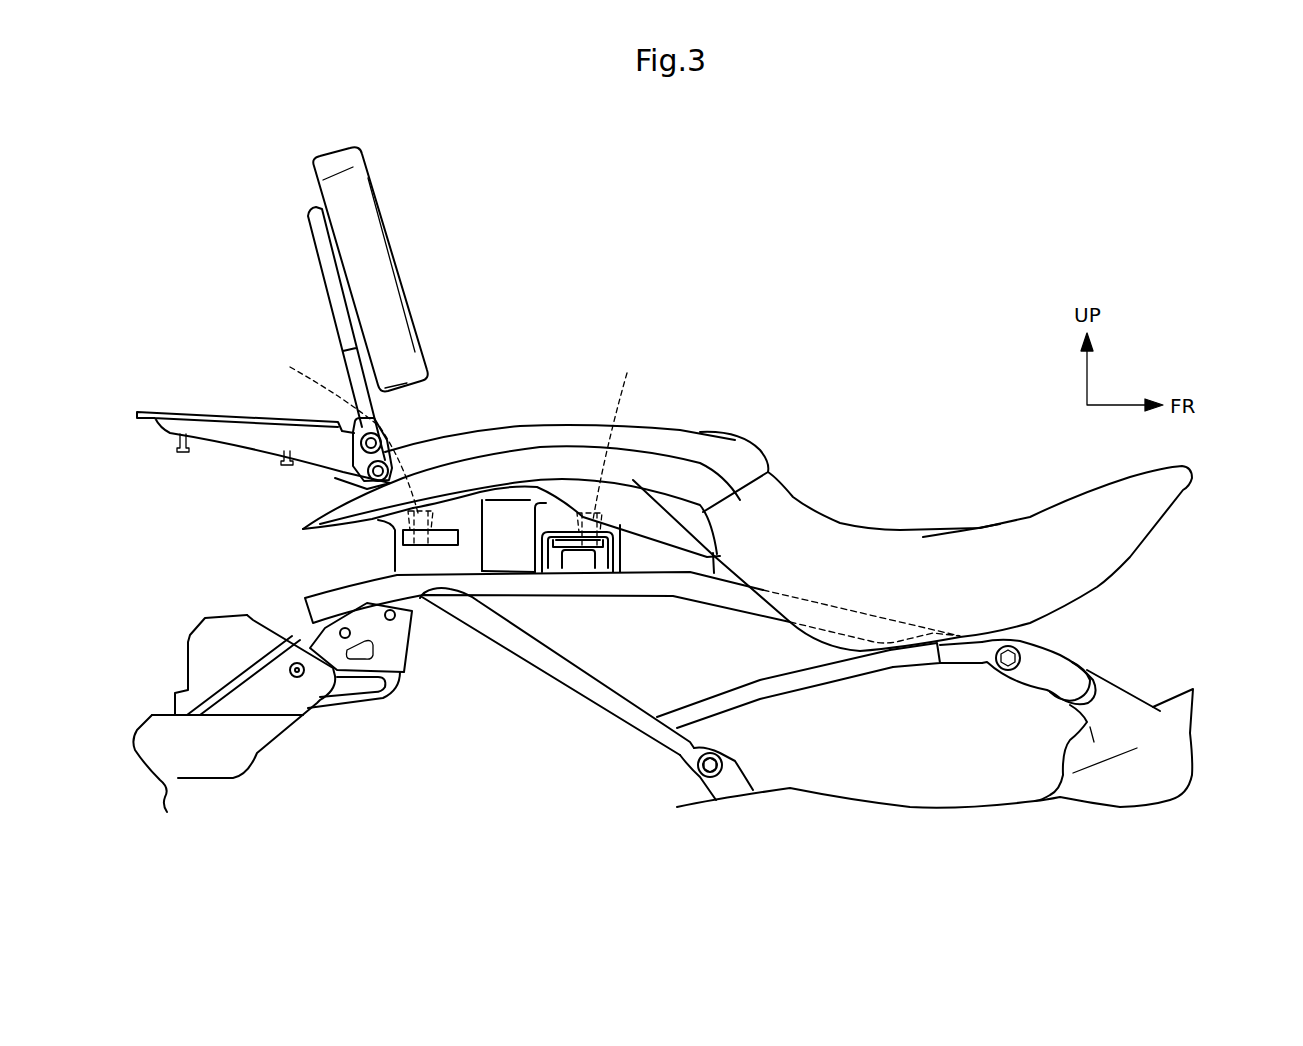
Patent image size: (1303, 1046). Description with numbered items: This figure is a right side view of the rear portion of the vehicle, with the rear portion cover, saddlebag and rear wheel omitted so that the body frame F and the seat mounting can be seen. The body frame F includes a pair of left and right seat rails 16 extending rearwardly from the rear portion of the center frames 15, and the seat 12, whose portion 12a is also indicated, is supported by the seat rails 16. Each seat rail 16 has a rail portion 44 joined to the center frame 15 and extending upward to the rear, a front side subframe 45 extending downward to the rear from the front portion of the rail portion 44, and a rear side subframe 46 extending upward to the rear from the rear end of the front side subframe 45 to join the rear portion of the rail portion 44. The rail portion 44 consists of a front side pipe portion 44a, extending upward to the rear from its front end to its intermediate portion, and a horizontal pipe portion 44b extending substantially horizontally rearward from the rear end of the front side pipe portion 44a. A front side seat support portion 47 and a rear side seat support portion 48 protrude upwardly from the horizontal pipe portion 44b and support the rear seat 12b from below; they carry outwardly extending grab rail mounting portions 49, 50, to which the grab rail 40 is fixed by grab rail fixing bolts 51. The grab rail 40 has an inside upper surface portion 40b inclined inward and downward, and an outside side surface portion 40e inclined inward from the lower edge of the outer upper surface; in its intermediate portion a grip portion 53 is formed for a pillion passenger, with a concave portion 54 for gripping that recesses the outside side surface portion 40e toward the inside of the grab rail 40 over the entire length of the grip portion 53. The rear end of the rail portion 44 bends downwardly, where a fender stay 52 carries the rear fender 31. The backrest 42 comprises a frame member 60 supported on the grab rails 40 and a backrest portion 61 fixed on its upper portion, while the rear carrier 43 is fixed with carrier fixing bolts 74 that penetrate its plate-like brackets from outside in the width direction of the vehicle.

The seat 12 is at (988, 519).
The seat upper surface 12a is at (923, 537).
The rear seat 12b is at (657, 427).
The center frame 15 is at (1175, 753).
The seat rail 16 is at (666, 560).
The rear fender 31 is at (192, 683).
The grab rail 40 is at (664, 460).
The inside upper surface portion 40b is at (483, 463).
The outside side surface portion 40e is at (633, 560).
The backrest 42 is at (392, 195).
The rear carrier 43 is at (163, 412).
The rail portion 44 is at (748, 573).
The front side pipe portion 44a is at (807, 610).
The horizontal pipe portion 44b is at (510, 562).
The front side subframe 45 is at (753, 693).
The rear side subframe 46 is at (585, 683).
The front side seat support portion 47 is at (550, 503).
The rear side seat support portion 48 is at (463, 490).
The grab rail mounting portion 49 is at (573, 537).
The grab rail mounting portion 50 is at (440, 510).
The grab rail fixing bolt 51 is at (455, 444).
The fender stay 52 is at (397, 650).
The grip portion 53 is at (532, 457).
The concave portion for gripping 54 is at (487, 560).
The frame member 60 is at (328, 273).
The backrest portion 61 is at (328, 192).
The carrier fixing bolt 74 is at (362, 485).
The body frame F is at (1163, 704).